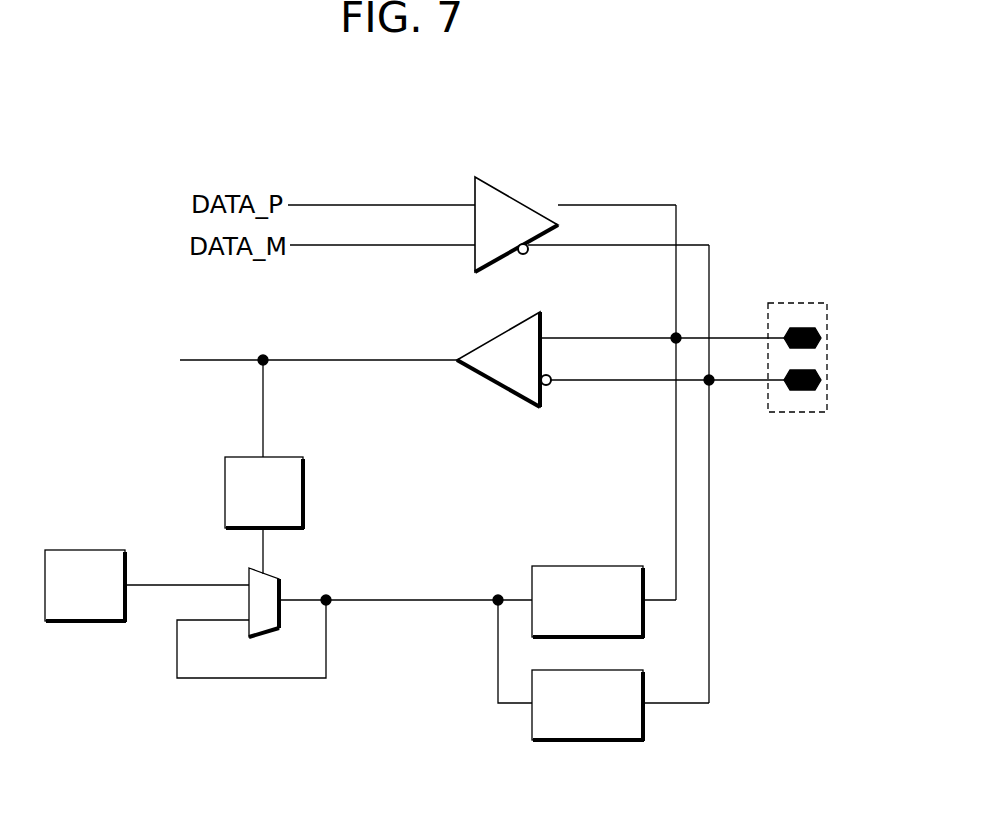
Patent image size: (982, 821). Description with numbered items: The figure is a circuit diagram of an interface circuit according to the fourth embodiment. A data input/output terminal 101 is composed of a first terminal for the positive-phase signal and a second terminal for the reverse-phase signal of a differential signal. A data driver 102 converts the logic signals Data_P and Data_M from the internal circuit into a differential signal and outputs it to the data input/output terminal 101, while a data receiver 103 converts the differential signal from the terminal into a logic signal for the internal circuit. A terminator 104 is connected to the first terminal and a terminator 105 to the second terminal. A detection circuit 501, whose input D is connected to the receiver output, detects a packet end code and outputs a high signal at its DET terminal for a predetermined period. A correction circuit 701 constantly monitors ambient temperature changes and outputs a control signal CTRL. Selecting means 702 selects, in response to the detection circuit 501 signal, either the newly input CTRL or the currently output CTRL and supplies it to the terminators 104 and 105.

The data input/output terminal 101 is at (805, 300).
The data driver 102 is at (505, 190).
The data receiver 103 is at (500, 386).
The terminator 104 is at (592, 565).
The terminator 105 is at (561, 742).
The detection circuit 501 is at (286, 455).
The correction circuit 701 is at (97, 548).
The selecting means 702 is at (283, 580).